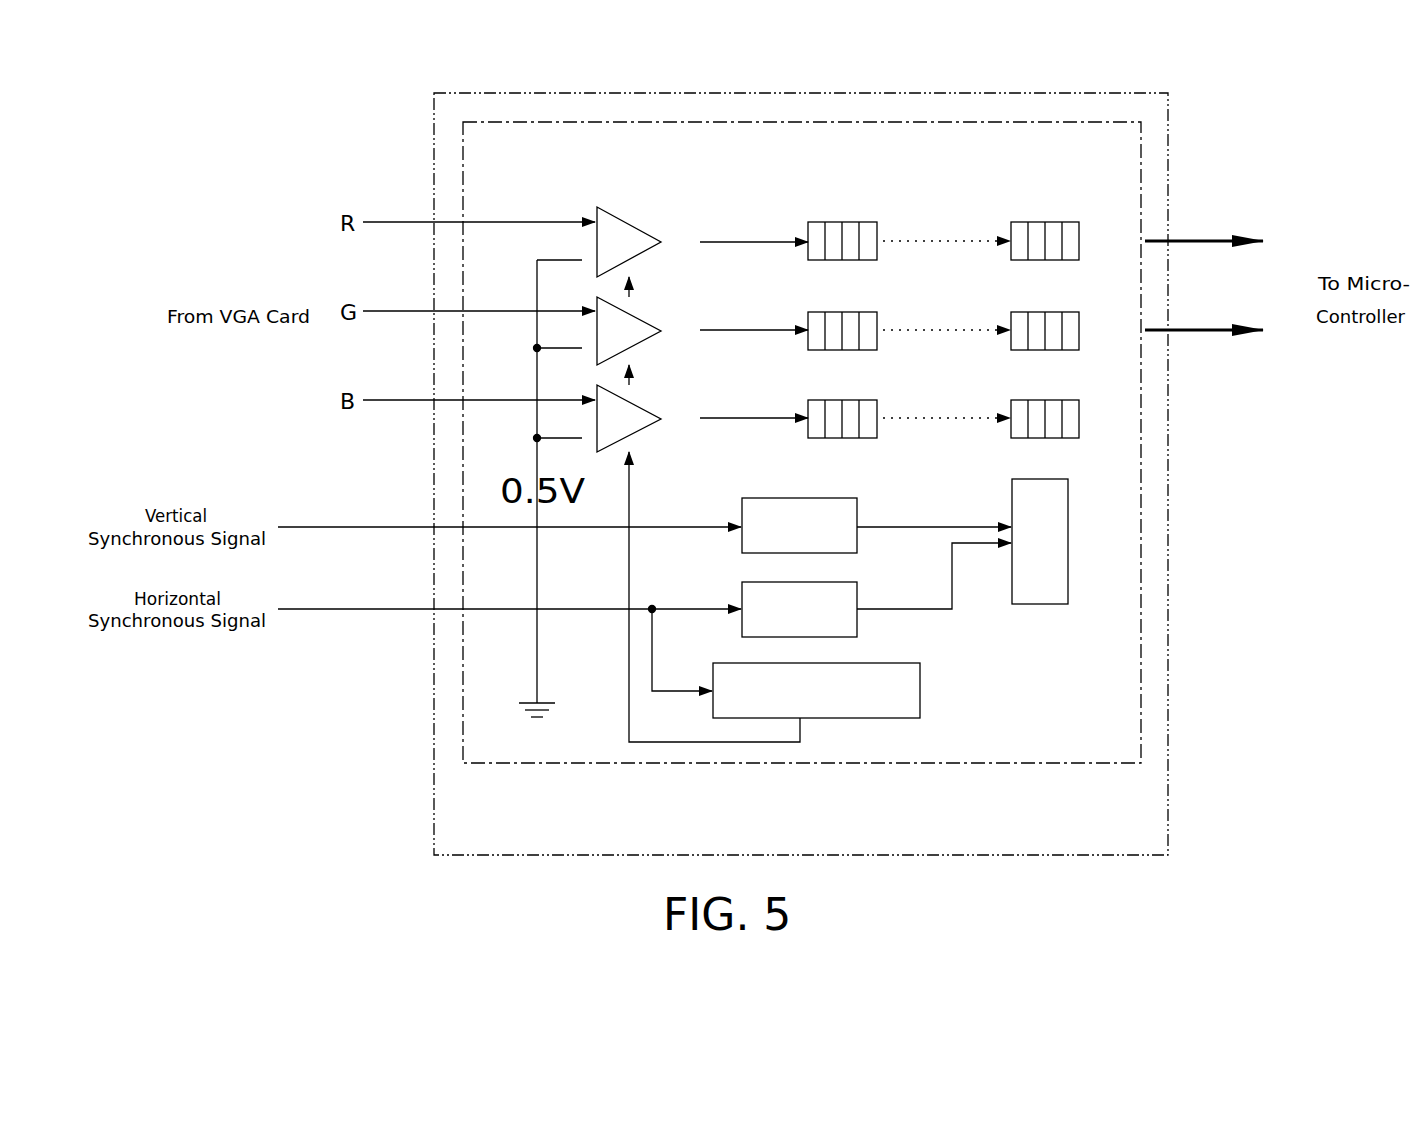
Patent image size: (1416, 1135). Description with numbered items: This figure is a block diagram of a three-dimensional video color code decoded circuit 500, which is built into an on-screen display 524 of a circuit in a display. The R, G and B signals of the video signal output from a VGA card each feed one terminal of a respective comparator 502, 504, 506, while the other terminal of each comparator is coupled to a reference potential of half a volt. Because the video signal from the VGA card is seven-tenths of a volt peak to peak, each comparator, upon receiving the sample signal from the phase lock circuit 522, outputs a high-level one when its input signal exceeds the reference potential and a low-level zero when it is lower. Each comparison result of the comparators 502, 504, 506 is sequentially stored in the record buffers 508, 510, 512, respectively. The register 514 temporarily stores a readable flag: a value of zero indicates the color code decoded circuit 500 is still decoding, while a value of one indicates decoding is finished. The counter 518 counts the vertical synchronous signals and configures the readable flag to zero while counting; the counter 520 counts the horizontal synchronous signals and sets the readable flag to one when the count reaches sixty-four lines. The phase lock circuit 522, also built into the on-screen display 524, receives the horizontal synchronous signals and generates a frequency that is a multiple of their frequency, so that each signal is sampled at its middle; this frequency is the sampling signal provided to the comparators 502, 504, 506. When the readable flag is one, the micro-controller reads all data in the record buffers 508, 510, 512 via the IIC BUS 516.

The color code decoded circuit 500 is at (1141, 668).
The comparator 502 is at (641, 233).
The comparator 504 is at (641, 322).
The comparator 506 is at (641, 410).
The record buffer 508 is at (1068, 222).
The record buffer 510 is at (1068, 312).
The record buffer 512 is at (1068, 400).
The register 514 is at (1058, 479).
The IIC BUS 516 is at (1192, 240).
The counter 518 is at (843, 498).
The counter 520 is at (843, 582).
The phase lock circuit 522 is at (878, 663).
The on-screen display 524 is at (1168, 728).